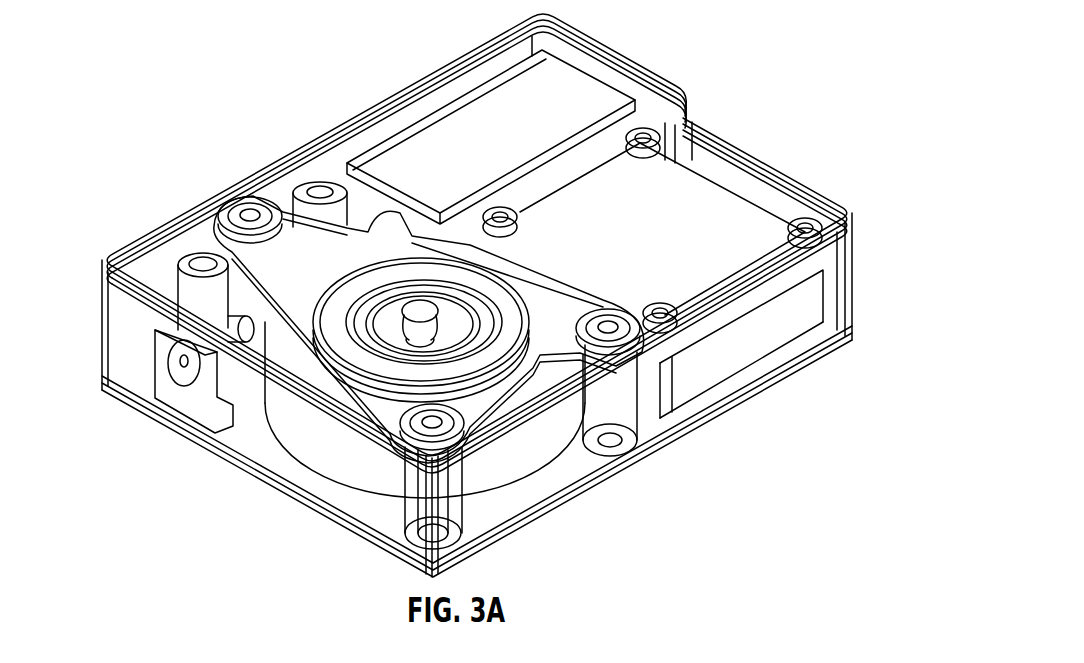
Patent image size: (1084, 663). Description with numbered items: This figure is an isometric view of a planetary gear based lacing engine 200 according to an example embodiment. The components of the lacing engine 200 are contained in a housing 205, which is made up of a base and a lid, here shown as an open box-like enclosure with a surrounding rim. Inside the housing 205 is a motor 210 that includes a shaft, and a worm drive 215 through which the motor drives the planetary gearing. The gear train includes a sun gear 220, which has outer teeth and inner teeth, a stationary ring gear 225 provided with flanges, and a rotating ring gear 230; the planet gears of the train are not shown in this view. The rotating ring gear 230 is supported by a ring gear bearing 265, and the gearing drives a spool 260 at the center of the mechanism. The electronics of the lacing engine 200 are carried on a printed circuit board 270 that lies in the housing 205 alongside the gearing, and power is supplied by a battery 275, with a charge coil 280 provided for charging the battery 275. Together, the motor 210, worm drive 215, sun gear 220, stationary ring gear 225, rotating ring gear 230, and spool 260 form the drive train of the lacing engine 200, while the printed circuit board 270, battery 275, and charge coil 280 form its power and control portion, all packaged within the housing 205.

The lacing engine 200 is at (760, 32).
The housing 205 is at (838, 212).
The motor 210 is at (573, 90).
The worm drive 215 is at (182, 275).
The sun gear 220 is at (300, 452).
The stationary ring gear 225 is at (555, 295).
The rotating ring gear 230 is at (380, 300).
The spool 260 is at (423, 313).
The ring gear bearing 265 is at (337, 305).
The printed circuit board 270 is at (707, 208).
The battery 275 is at (775, 335).
The charge coil 280 is at (738, 380).